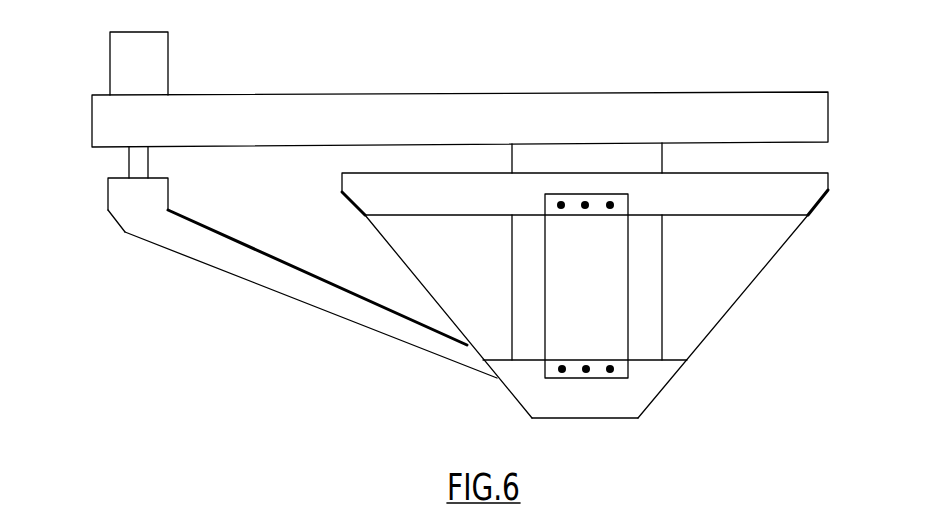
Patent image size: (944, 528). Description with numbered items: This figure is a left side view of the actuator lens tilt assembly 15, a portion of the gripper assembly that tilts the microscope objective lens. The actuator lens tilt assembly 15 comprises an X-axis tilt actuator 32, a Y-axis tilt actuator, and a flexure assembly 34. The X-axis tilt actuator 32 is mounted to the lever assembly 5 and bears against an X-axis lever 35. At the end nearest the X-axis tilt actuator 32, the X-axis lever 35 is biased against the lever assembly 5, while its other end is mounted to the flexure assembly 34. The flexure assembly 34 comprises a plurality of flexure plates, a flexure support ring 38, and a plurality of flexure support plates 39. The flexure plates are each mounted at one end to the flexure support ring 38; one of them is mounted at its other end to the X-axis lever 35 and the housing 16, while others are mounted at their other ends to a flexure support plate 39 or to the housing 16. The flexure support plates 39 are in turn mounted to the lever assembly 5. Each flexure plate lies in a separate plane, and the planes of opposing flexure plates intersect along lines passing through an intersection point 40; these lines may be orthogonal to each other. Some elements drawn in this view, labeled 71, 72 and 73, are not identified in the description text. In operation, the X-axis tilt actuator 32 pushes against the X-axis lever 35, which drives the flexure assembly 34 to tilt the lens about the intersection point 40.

The lever assembly 5 is at (247, 93).
The X-axis tilt actuator 32 is at (129, 167).
The X-axis lever 35 is at (153, 245).
The actuator lens tilt assembly 15 is at (288, 350).
The flexure support plates 39 is at (638, 227).
The flexure support ring 38 is at (810, 172).
The side wall 71 is at (393, 255).
The center plate 72 is at (557, 311).
The side wall 73 is at (730, 313).
The housing 16 is at (642, 395).
The intersection point 40 is at (578, 420).
The flexure assembly 34 is at (742, 368).